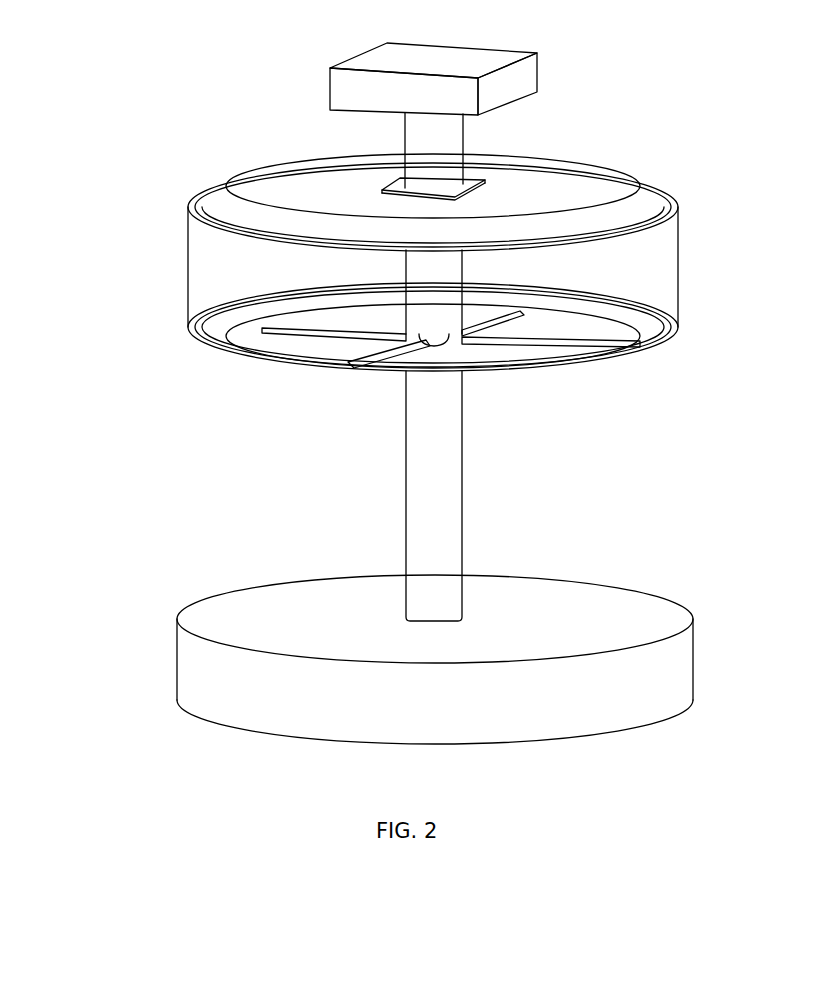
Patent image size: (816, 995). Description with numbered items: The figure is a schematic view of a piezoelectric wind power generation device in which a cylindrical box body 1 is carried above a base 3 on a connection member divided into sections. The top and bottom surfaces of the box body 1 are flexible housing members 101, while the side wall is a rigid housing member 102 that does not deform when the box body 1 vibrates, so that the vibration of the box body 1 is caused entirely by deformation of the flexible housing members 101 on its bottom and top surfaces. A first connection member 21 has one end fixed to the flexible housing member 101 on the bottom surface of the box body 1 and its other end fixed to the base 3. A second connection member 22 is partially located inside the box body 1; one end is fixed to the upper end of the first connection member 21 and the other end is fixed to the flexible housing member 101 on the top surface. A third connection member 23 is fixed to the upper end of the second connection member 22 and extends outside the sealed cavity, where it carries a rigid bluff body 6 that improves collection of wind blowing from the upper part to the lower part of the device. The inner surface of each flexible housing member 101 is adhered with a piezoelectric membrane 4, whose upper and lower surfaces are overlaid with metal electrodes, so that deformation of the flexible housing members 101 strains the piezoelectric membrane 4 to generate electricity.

The cylindrical box body 1 is at (389, 269).
The flexible housing member 101 is at (272, 183).
The rigid housing member 102 is at (187, 252).
The first connection member 21 is at (420, 492).
The second connection member 22 is at (415, 270).
The third connection member 23 is at (423, 138).
The base 3 is at (540, 603).
The piezoelectric membrane 4 is at (383, 357).
The rigid bluff body 6 is at (345, 79).